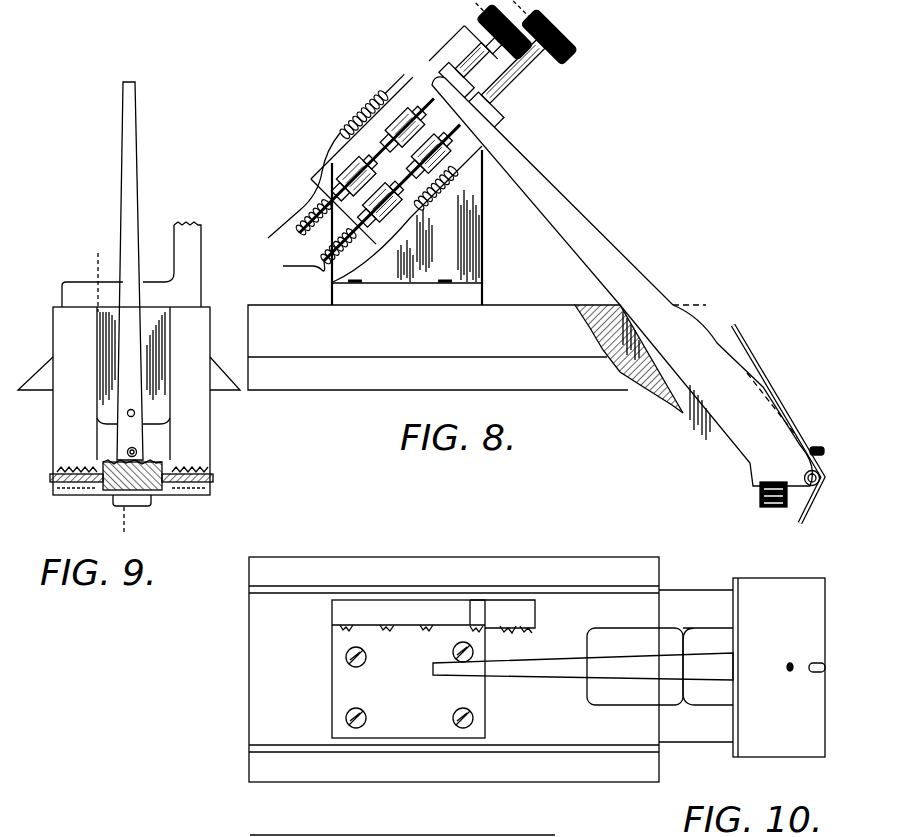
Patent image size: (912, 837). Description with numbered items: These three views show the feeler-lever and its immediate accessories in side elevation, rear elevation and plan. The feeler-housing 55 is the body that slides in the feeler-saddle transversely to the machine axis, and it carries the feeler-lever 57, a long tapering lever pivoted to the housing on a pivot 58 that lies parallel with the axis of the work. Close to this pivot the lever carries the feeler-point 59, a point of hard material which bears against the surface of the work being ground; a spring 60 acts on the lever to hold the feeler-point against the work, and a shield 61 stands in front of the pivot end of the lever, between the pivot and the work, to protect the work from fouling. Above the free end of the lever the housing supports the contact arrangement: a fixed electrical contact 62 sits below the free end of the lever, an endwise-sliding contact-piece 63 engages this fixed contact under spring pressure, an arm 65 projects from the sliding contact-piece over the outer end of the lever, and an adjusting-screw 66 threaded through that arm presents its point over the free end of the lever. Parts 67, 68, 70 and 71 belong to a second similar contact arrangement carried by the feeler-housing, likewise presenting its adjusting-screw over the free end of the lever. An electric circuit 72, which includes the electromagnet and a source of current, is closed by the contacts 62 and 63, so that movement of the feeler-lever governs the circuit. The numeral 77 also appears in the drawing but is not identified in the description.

In FIG. 9, the feeler-housing 55 is at (48, 345).
In FIG. 8, the feeler-housing 55 is at (563, 378).
In FIG. 10, the feeler-housing 55 is at (510, 568).
In FIG. 9, the feeler-lever 57 is at (130, 158).
In FIG. 8, the feeler-lever 57 is at (585, 232).
In FIG. 10, the feeler-lever 57 is at (541, 664).
In FIG. 9, the pivot 58 is at (210, 478).
In FIG. 8, the pivot 58 is at (805, 472).
In FIG. 9, the feeler-point 59 is at (128, 452).
In FIG. 8, the feeler-point 59 is at (818, 445).
In FIG. 10, the feeler-point 59 is at (817, 661).
In FIG. 8, the spring 60 is at (760, 495).
In FIG. 8, the shield 61 is at (740, 343).
In FIG. 10, the shield 61 is at (752, 588).
In FIG. 8, the fixed electrical contact 62 is at (391, 192).
In FIG. 8, the endwise-sliding contact-piece 63 is at (430, 169).
In FIG. 8, the arm 65 is at (514, 82).
In FIG. 8, the adjusting-screw 66 is at (527, 38).
In FIG. 8, the second contact arrangement part 67 is at (366, 165).
In FIG. 8, the second contact arrangement part 68 is at (404, 129).
In FIG. 8, the second contact arrangement part 70 is at (470, 67).
In FIG. 8, the second contact arrangement part 71 is at (500, 37).
In FIG. 8, the electric circuit 72 is at (338, 246).
In FIG. 8, the wire 77 is at (351, 153).